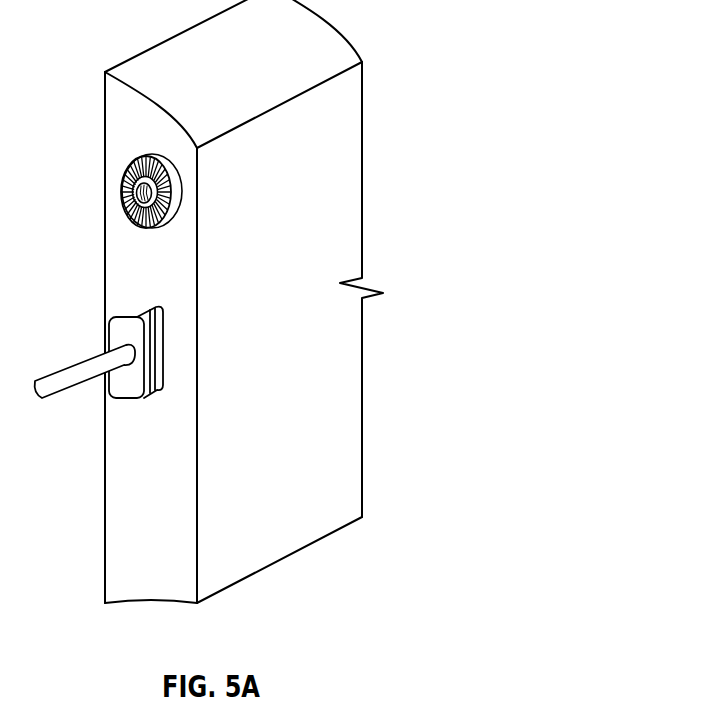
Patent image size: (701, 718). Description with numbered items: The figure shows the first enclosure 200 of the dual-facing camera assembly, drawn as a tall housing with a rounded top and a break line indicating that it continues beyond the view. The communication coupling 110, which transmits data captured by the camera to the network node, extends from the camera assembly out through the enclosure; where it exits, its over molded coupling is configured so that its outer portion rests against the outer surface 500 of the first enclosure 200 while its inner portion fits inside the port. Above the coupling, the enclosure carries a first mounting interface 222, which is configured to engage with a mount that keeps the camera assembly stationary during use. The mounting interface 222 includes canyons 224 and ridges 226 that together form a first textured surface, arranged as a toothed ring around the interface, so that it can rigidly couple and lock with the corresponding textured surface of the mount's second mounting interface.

The first enclosure 200 is at (333, 33).
The outer surface 500 is at (161, 588).
The ridges 226 is at (157, 162).
The canyons 224 is at (170, 195).
The first mounting interface 222 is at (138, 190).
The communication coupling 110 is at (70, 373).